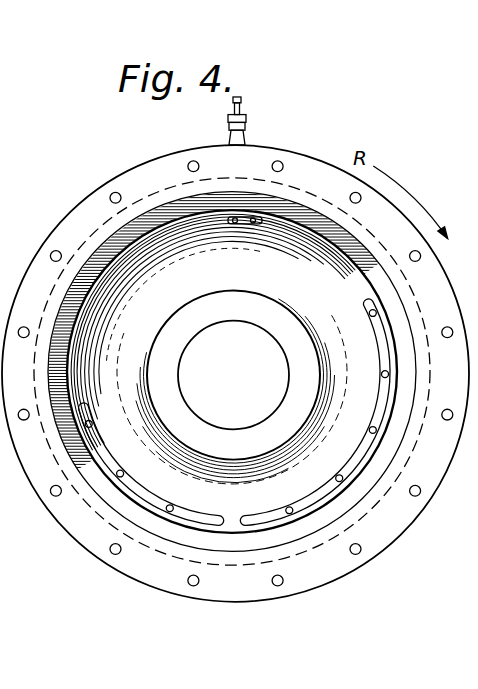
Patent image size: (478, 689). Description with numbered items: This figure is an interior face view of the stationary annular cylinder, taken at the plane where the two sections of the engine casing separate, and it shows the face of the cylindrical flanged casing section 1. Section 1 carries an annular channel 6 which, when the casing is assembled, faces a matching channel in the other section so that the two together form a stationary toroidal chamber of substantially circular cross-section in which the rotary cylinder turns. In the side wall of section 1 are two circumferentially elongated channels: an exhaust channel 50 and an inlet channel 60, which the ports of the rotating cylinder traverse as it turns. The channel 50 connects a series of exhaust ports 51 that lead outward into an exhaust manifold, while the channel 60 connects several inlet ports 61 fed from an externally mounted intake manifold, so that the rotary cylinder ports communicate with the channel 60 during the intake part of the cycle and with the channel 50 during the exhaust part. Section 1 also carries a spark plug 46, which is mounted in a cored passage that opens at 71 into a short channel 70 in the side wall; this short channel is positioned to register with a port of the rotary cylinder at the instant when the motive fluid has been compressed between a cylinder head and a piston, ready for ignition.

The cylindrical flanged casing section 1 is at (235, 376).
The annular channel 6 is at (232, 368).
The spark plug 46 is at (257, 121).
The exhaust channel 50 is at (315, 412).
The exhaust port 51 is at (337, 412).
The inlet channel 60 is at (151, 464).
The inlet port 61 is at (150, 464).
The short channel 70 is at (258, 239).
The spark plug passage opening 71 is at (228, 244).